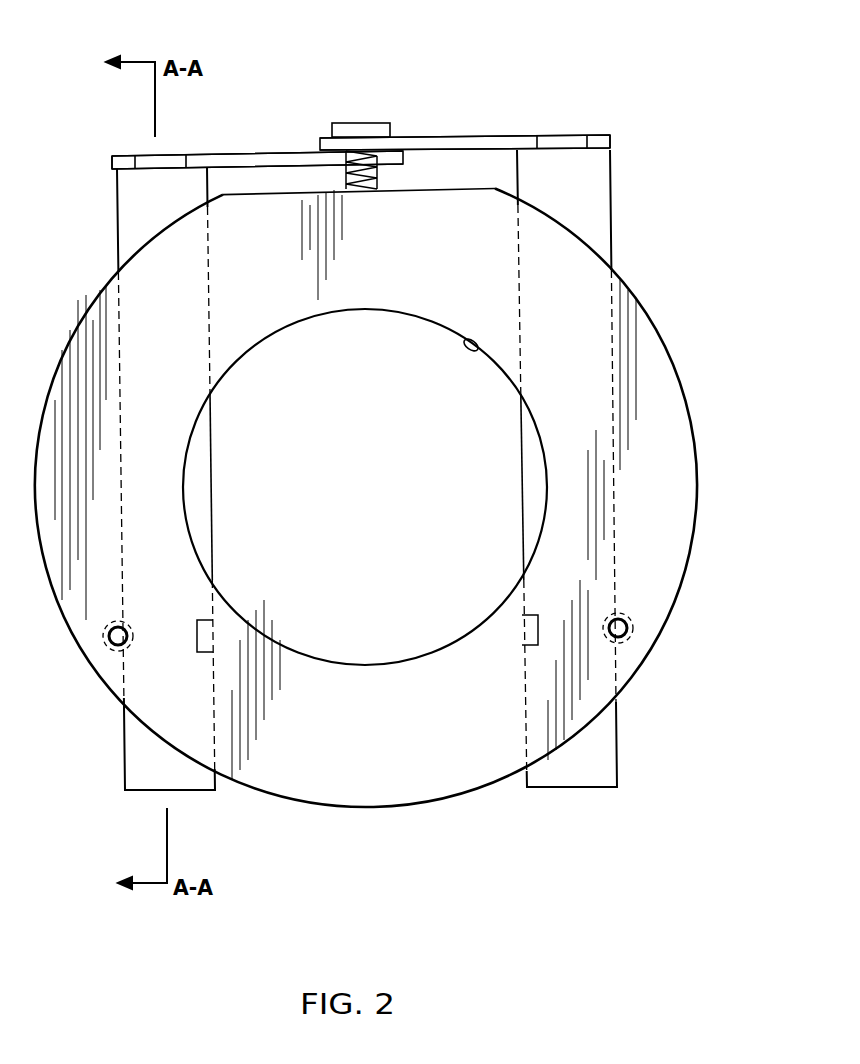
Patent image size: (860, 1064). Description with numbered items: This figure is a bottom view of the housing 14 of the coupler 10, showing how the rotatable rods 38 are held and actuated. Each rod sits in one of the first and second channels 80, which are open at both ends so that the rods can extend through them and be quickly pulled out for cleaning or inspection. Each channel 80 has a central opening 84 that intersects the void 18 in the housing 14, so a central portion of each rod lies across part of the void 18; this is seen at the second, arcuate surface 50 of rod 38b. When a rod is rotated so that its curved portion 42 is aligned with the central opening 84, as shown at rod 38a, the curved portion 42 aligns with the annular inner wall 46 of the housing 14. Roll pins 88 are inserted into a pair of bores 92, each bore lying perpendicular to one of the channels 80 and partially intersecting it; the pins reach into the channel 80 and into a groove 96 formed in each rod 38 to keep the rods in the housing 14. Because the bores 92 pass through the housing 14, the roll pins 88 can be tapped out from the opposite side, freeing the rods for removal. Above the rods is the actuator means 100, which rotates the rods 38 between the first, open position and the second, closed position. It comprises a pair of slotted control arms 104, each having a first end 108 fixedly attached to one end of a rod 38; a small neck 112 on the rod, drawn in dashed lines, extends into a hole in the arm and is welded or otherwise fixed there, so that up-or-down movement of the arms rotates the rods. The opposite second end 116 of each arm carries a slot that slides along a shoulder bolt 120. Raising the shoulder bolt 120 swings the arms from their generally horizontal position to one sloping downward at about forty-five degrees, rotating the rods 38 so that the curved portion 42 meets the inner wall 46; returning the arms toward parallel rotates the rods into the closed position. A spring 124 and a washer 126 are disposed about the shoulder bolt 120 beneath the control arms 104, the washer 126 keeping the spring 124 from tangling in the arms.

The coupler 10 is at (738, 285).
The housing 14 is at (668, 460).
The void 18 is at (391, 504).
The rotatable rods 38 is at (122, 227).
The rotatable rod 38a is at (578, 792).
The rotatable rod 38b is at (150, 795).
The curved portion 42 is at (546, 487).
The annular inner wall 46 is at (476, 343).
The second, arcuate surface 50 is at (212, 488).
The channels 80 is at (112, 308).
The central opening 84 is at (212, 572).
The roll pins 88 is at (110, 641).
The bores 92 is at (108, 650).
The groove 96 is at (205, 634).
The actuator means 100 is at (390, 68).
The slotted control arms 104 is at (225, 153).
The first end 108 is at (147, 155).
The neck 112 is at (112, 163).
The second end 116 is at (305, 150).
The shoulder bolt 120 is at (362, 122).
The spring 124 is at (378, 189).
The washer 126 is at (413, 150).